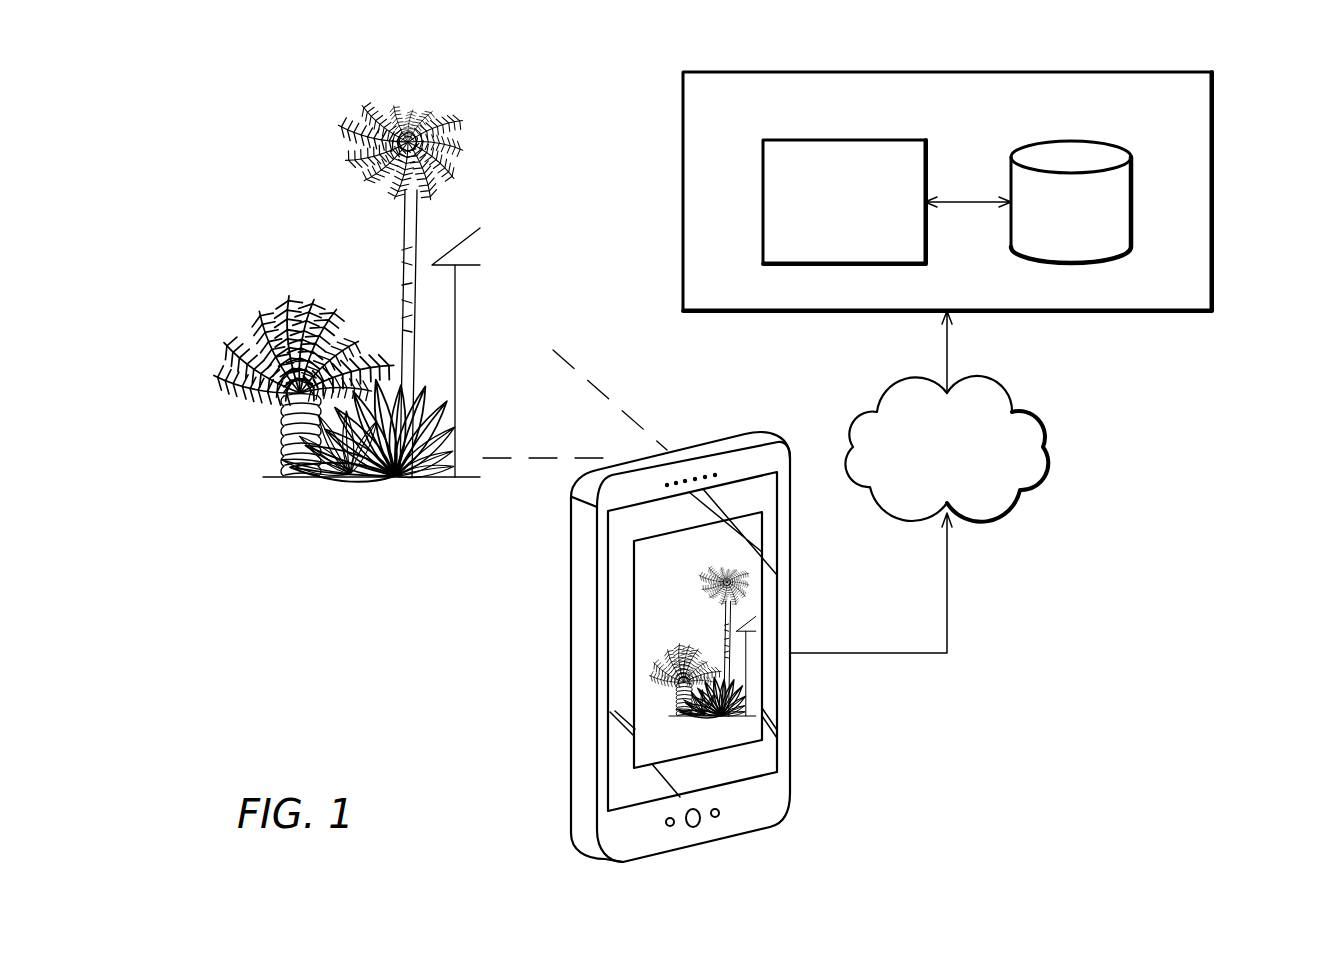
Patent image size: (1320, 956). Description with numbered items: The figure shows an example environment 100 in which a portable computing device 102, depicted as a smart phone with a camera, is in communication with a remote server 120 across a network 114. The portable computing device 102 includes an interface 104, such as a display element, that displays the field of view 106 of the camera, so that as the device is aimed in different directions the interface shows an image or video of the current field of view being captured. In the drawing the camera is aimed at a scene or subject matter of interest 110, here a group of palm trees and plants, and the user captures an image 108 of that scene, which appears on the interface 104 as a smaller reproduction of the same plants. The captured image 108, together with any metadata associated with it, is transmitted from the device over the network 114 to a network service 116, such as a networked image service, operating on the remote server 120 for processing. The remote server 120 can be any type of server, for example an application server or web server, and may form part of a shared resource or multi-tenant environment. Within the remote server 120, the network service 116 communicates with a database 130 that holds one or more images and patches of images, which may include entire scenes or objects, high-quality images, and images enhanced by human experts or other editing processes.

The example environment 100 is at (201, 146).
The portable computing device 102 is at (677, 626).
The interface 104 is at (630, 531).
The field of view 106 is at (580, 384).
The image 108 is at (784, 545).
The scene or subject matter of interest 110 is at (465, 187).
The network 114 is at (1043, 432).
The network service 116 is at (925, 173).
The remote server 120 is at (978, 181).
The database 130 is at (1132, 172).